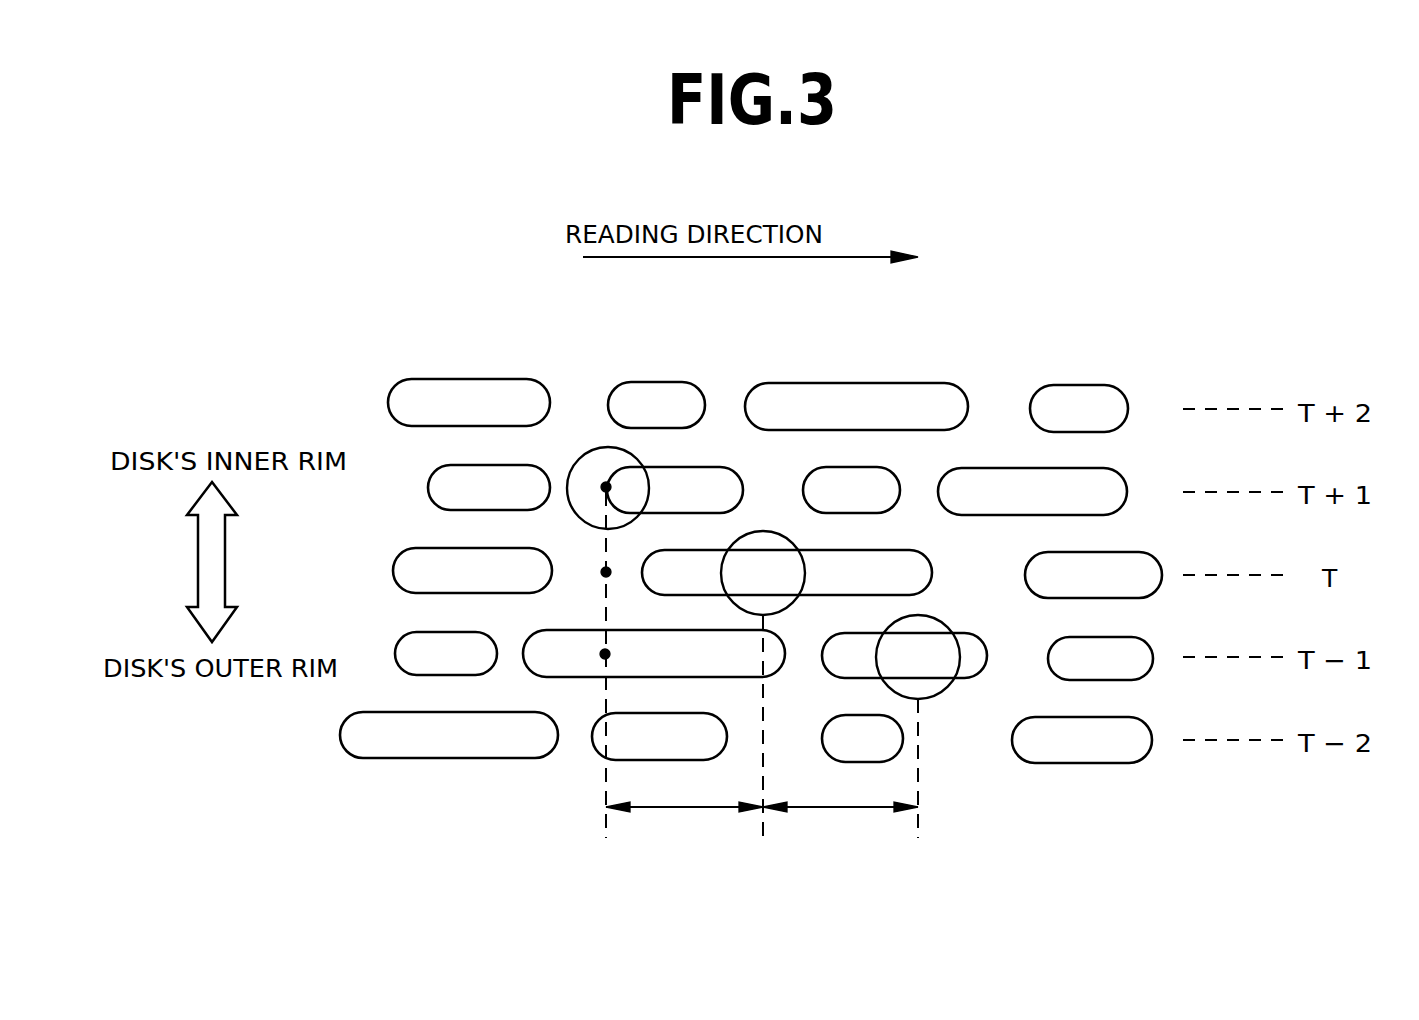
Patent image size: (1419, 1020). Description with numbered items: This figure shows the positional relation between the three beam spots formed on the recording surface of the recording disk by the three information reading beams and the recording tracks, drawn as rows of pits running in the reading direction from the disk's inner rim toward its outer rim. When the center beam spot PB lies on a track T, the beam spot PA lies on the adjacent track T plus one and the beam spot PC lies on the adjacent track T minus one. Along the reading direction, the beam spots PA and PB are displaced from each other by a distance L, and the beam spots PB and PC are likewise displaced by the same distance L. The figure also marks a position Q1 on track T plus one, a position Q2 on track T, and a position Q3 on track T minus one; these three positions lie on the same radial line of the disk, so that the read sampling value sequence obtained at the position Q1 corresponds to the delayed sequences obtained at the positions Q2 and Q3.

The beam spot PA is at (602, 446).
The center beam spot PB is at (773, 531).
The beam spot PC is at (933, 618).
The position on recording track T+1 Q1 is at (590, 487).
The position on recording track T Q2 is at (587, 574).
The position on recording track T−1 Q3 is at (586, 655).
The distance L is at (762, 823).